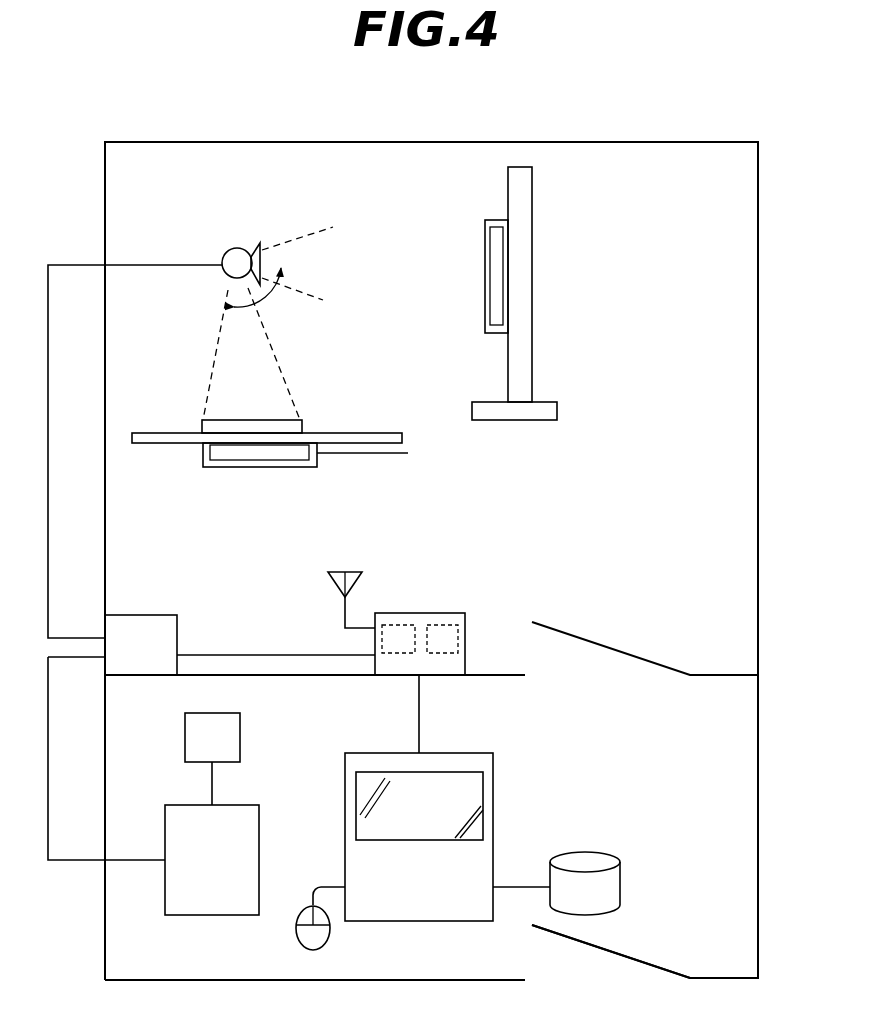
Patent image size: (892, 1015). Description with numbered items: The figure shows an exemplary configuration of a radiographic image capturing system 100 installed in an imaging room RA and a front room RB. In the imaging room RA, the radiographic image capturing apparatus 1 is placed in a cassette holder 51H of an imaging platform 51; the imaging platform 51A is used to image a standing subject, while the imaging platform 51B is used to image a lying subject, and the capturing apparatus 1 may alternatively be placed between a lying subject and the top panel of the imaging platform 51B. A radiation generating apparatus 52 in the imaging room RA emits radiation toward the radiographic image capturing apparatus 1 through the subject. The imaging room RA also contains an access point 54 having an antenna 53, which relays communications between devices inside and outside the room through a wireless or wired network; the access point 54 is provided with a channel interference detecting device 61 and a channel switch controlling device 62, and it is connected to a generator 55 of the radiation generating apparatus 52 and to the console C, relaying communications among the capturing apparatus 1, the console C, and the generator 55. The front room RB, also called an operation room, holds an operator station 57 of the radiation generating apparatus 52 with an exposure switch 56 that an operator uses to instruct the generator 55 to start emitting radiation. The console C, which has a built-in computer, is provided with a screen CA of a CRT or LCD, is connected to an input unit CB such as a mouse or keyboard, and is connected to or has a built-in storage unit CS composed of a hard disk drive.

The radiographic image capturing system 100 is at (415, 135).
The imaging room RA is at (760, 368).
The front room RB is at (760, 830).
The radiation generating apparatus 52 is at (230, 250).
The imaging platform 51 is at (393, 308).
The imaging platform 51A is at (630, 178).
The imaging platform 51B is at (352, 413).
The cassette holder 51H is at (500, 220).
The radiographic image capturing apparatus 1 is at (497, 292).
The generator 55 is at (143, 615).
The antenna 53 is at (325, 582).
The access point 54 is at (440, 621).
The channel interference detecting device 61 is at (398, 623).
The channel switch controlling device 62 is at (440, 622).
The exposure switch 56 is at (185, 735).
The operator station 57 is at (260, 845).
The console C is at (450, 819).
The screen CA is at (450, 772).
The input unit CB is at (325, 940).
The storage unit CS is at (622, 878).